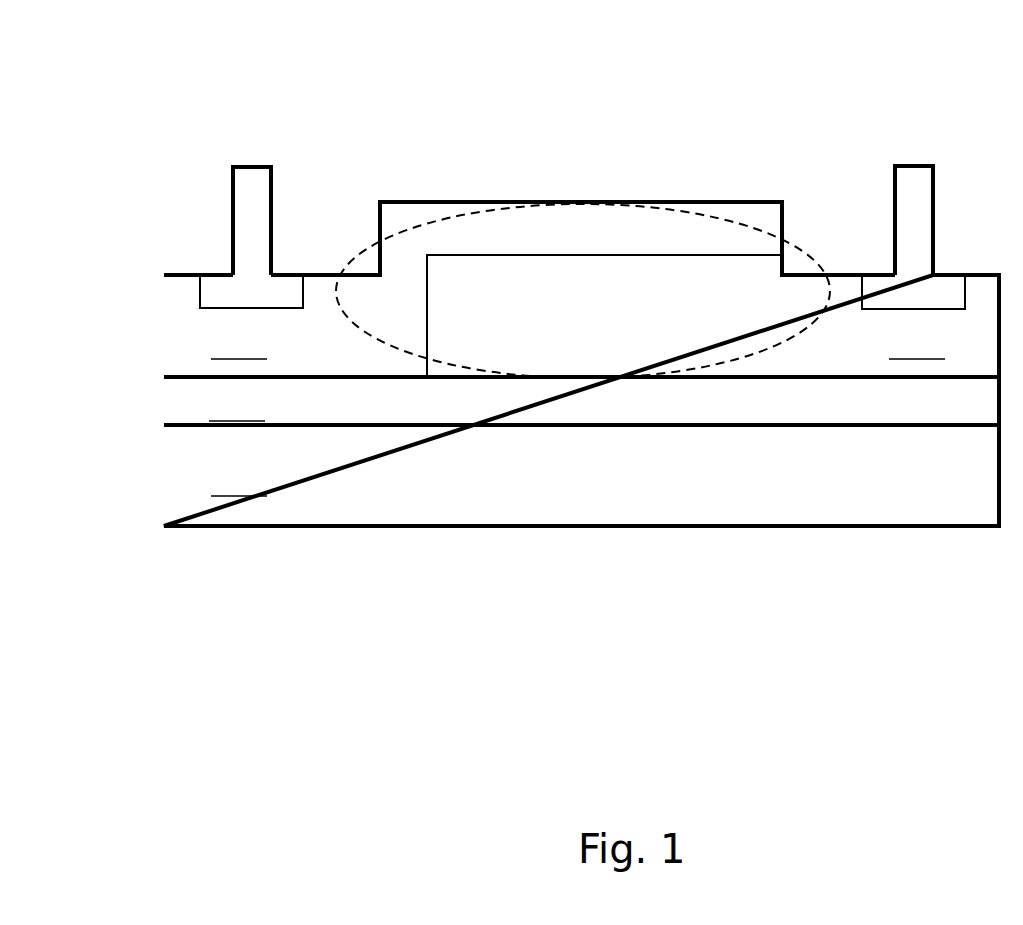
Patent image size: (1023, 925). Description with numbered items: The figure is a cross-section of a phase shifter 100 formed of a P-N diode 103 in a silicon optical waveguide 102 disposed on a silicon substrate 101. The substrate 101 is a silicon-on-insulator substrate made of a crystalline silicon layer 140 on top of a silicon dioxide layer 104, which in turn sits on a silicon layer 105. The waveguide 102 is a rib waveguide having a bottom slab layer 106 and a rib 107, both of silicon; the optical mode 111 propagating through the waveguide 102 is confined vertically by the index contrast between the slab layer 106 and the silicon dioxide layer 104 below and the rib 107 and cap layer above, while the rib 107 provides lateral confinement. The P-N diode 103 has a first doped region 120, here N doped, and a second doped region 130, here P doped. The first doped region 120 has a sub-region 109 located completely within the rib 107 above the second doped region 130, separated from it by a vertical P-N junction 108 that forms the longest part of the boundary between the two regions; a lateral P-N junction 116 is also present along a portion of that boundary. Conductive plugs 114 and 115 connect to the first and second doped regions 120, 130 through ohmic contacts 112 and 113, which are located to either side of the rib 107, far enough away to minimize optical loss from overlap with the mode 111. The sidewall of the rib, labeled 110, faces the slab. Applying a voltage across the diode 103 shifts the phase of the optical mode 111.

The phase shifter 100 is at (328, 133).
The silicon substrate 101 is at (113, 382).
The silicon optical waveguide 102 is at (487, 133).
The P-N diode 103 is at (733, 157).
The silicon dioxide layer 104 is at (237, 405).
The silicon layer 105 is at (239, 480).
The bottom slab layer 106 is at (163, 333).
The rib 107 is at (782, 238).
The vertical P-N junction 108 is at (568, 255).
The sub-region 109 is at (567, 235).
The rib left sidewall 110 is at (402, 277).
The optical mode 111 is at (737, 355).
The ohmic contact 112 is at (217, 288).
The ohmic contact 113 is at (944, 295).
The conductive plug 114 is at (255, 192).
The conductive plug 115 is at (910, 202).
The lateral P-N junction 116 is at (427, 295).
The first doped region 120 is at (271, 343).
The second doped region 130 is at (892, 343).
The crystalline silicon layer 140 is at (187, 322).